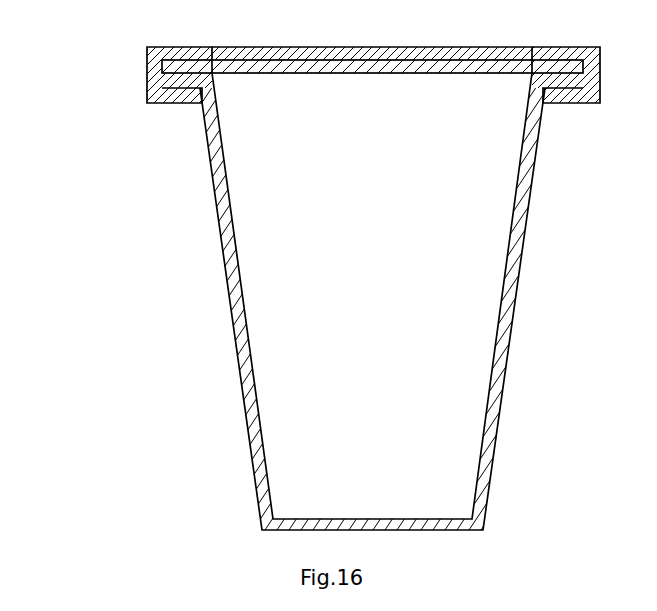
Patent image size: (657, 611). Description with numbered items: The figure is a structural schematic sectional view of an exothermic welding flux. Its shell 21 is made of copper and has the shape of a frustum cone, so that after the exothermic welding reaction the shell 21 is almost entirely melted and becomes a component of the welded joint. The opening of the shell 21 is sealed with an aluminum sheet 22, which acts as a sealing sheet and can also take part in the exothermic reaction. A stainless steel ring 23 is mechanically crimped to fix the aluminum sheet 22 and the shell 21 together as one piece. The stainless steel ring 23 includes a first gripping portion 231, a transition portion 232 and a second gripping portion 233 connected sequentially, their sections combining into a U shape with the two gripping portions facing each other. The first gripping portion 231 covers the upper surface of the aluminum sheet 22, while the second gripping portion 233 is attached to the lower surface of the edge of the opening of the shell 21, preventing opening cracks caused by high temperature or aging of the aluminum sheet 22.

The shell 21 is at (530, 190).
The aluminum sheet 22 is at (565, 65).
The stainless steel ring 23 is at (72, 41).
The first gripping portion 231 is at (150, 48).
The transition portion 232 is at (163, 74).
The second gripping portion 233 is at (150, 102).